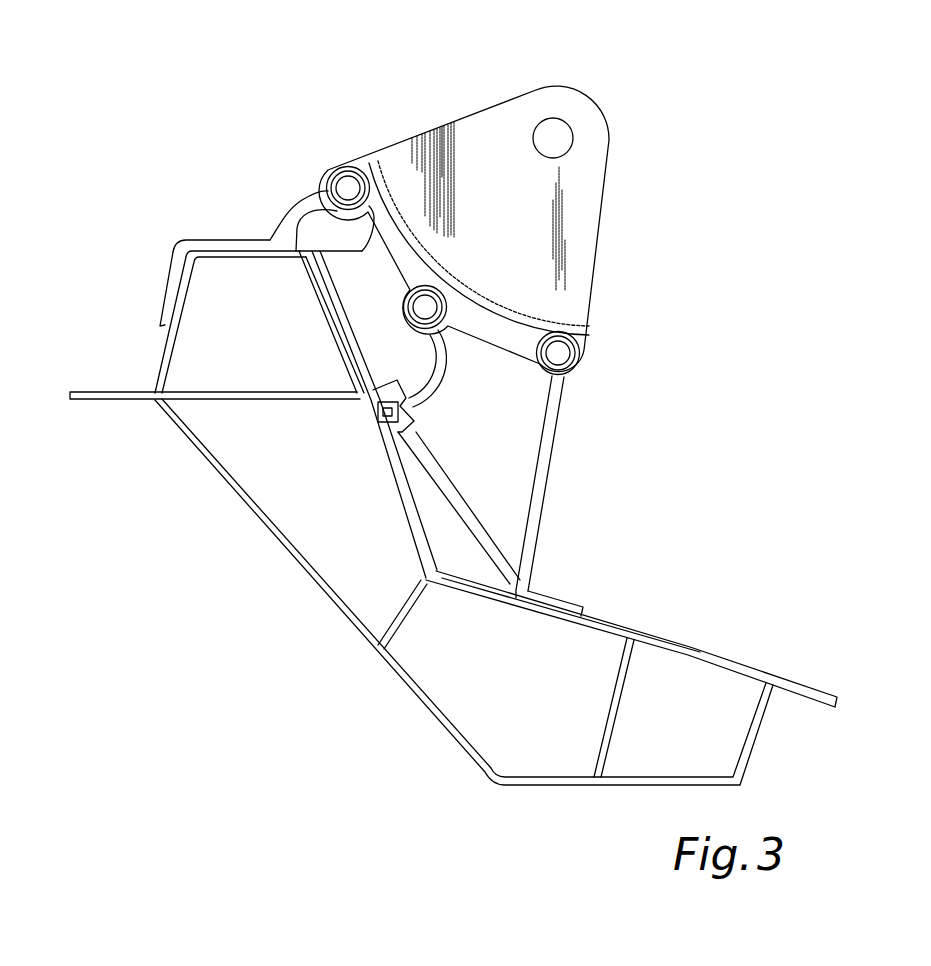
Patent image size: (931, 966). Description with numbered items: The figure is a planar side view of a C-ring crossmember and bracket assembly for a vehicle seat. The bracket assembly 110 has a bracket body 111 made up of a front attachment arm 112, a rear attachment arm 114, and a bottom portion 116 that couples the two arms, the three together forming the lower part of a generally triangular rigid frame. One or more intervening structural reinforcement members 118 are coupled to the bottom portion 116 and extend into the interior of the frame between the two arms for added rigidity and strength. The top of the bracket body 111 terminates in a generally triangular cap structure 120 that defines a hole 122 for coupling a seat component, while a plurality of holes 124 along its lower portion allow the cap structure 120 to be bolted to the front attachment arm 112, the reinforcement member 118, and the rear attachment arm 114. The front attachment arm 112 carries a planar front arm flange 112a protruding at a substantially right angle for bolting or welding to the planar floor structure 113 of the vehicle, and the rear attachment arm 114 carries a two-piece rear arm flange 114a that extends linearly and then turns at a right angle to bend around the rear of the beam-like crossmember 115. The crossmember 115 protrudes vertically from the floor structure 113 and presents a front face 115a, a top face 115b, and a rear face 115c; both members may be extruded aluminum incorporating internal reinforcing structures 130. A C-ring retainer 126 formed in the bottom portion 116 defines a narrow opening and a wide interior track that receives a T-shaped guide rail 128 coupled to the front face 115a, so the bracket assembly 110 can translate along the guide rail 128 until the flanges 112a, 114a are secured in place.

The bracket assembly 110 is at (622, 84).
The bracket body 111 is at (599, 206).
The front attachment arm 112 is at (549, 468).
The front arm flange 112a is at (560, 590).
The floor structure 113 is at (684, 646).
The rear attachment arm 114 is at (297, 212).
The rear arm flange 114a is at (230, 239).
The crossmember 115 is at (167, 303).
The front face 115a is at (322, 310).
The top face 115b is at (221, 257).
The rear face 115c is at (158, 362).
The bottom portion 116 is at (450, 520).
The intervening structural reinforcement member 118 is at (426, 379).
The cap structure 120 is at (482, 82).
The hole 122 is at (556, 104).
The holes 124 is at (579, 353).
The C-ring retainer 126 is at (372, 455).
The T-shaped guide rail 128 is at (352, 423).
The internal reinforcing structures 130 is at (394, 621).